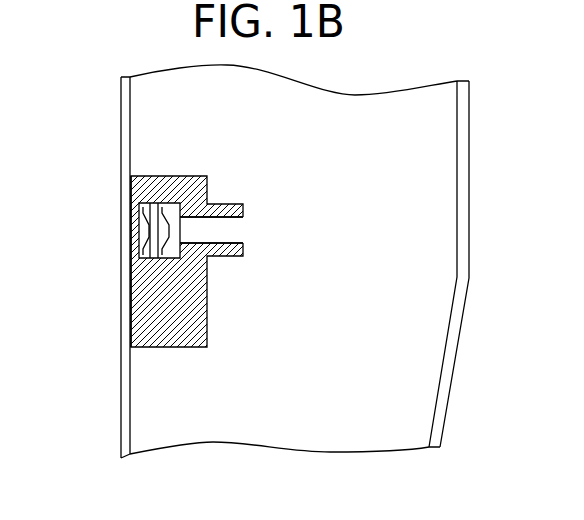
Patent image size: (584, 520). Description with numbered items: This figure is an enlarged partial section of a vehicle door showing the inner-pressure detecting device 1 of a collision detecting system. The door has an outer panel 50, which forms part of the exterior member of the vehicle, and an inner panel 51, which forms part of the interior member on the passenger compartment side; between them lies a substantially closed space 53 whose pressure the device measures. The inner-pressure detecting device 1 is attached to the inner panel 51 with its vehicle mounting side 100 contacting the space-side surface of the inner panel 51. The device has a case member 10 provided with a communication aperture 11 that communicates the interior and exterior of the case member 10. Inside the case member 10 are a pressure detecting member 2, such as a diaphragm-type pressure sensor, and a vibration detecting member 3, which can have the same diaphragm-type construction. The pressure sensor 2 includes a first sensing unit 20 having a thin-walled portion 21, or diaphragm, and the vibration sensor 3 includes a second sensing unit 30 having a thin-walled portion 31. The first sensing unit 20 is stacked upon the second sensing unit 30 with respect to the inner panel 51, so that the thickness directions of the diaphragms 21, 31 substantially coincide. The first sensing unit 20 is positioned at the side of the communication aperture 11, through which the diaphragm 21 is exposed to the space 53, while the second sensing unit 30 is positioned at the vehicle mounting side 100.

The inner-pressure detecting device 1 is at (240, 170).
The pressure detecting member 2 is at (169, 203).
The vibration detecting member 3 is at (149, 203).
The case member 10 is at (184, 176).
The communication aperture 11 is at (225, 230).
The sensing unit 20 is at (221, 254).
The thin-walled portion 21 is at (181, 240).
The sensing unit 30 is at (101, 231).
The thin-walled portion 31 is at (155, 231).
The outer panel 50 is at (438, 422).
The inner panel 51 is at (121, 413).
The substantially closed space 53 is at (285, 428).
The vehicle mounting side 100 is at (132, 330).